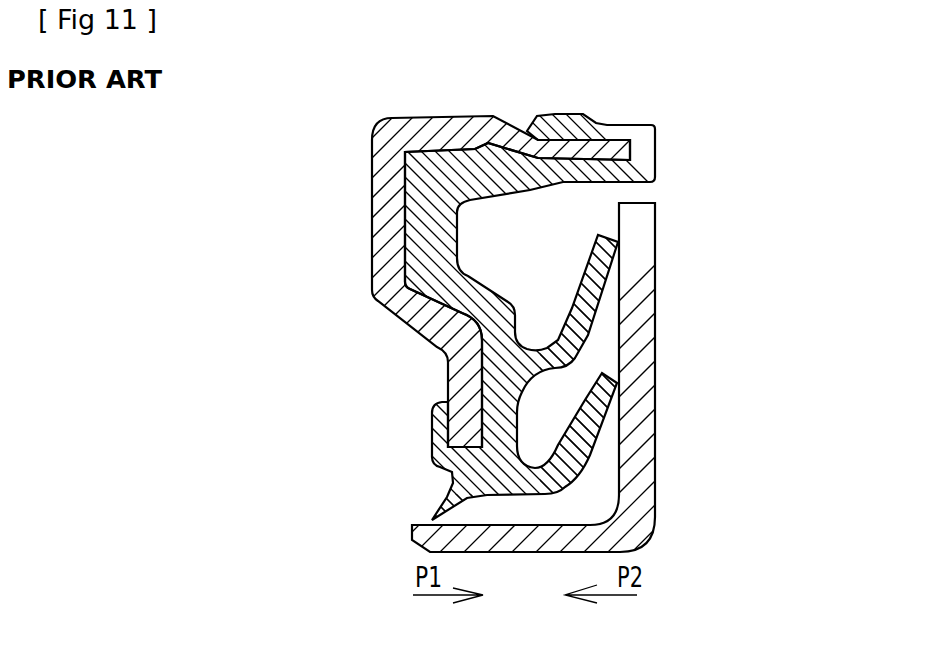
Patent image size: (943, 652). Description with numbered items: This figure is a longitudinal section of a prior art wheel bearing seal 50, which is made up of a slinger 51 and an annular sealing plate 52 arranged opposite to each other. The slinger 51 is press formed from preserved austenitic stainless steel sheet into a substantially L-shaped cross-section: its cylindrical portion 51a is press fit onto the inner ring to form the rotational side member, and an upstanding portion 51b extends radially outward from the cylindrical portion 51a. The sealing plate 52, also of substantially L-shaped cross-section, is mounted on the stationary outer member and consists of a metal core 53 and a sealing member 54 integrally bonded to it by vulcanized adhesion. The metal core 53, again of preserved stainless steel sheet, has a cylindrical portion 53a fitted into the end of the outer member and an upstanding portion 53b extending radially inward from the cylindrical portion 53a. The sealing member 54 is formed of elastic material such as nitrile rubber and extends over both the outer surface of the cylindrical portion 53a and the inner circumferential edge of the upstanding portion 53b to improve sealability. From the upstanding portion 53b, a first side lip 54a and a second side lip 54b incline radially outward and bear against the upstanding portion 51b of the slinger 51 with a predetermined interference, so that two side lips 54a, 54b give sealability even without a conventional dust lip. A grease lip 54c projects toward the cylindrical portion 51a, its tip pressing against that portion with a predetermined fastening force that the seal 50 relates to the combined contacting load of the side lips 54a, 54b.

The seal 50 is at (745, 219).
The slinger 51 is at (775, 358).
The cylindrical portion 51a is at (658, 471).
The upstanding portion 51b is at (640, 347).
The annular sealing plate 52 is at (170, 195).
The metal core 53 is at (245, 157).
The cylindrical portion 53a is at (427, 112).
The upstanding portion 53b is at (392, 217).
The sealing member 54 is at (253, 307).
The first side lip 54a is at (602, 243).
The second side lip 54b is at (607, 383).
The grease lip 54c is at (428, 517).